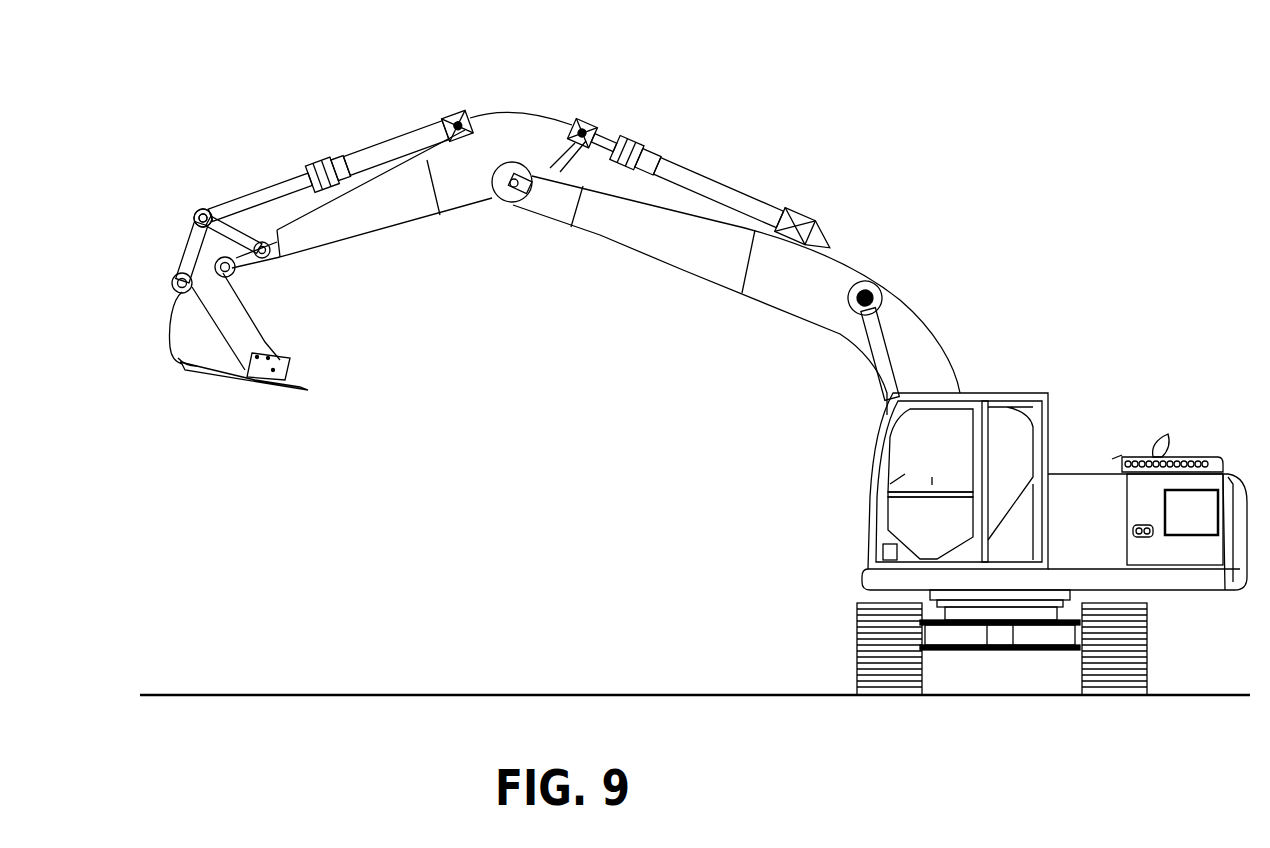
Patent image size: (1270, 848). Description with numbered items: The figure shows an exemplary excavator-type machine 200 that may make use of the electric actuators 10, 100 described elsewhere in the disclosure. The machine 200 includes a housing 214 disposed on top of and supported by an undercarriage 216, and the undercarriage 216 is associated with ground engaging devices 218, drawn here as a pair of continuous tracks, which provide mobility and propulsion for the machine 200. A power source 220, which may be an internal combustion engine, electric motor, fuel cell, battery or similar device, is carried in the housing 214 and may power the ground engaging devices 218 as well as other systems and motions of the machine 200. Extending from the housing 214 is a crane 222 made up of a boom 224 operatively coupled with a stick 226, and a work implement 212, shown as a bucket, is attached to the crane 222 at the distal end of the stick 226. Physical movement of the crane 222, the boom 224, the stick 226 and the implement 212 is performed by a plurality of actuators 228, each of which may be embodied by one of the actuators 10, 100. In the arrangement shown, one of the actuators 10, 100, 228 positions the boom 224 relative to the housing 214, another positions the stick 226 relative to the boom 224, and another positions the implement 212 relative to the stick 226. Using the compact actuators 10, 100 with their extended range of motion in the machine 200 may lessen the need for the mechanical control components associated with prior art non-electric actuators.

The machine 200 is at (935, 113).
The actuators 228 is at (525, 242).
The actuator 10 is at (525, 242).
The actuator 100 is at (360, 154).
The stick 226 is at (377, 230).
The crane 222 is at (524, 212).
The boom 224 is at (711, 278).
The implement 212 is at (242, 338).
The housing 214 is at (1043, 393).
The power source 220 is at (1208, 524).
The undercarriage 216 is at (990, 649).
The ground engaging devices 218 is at (858, 605).